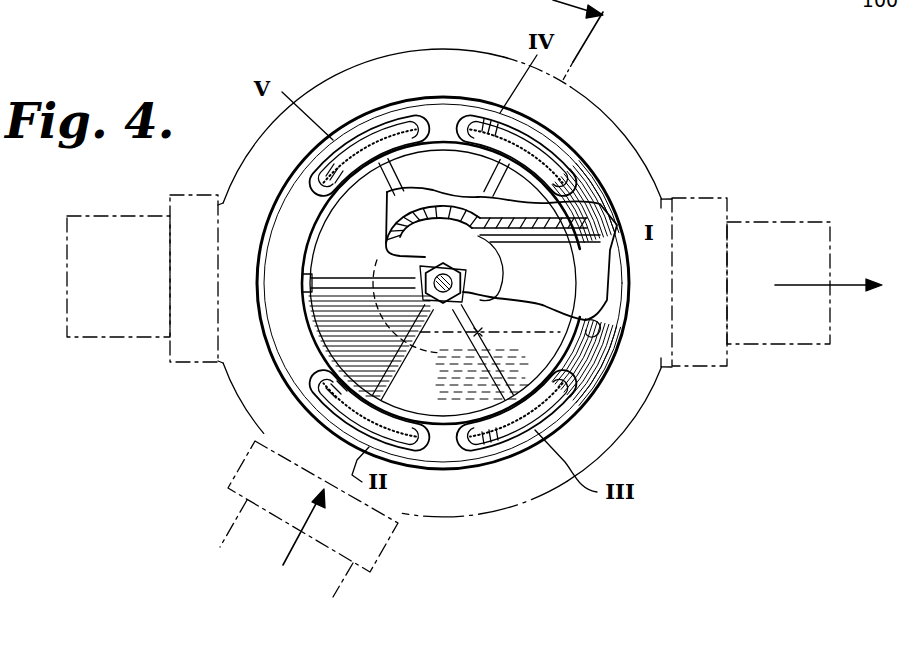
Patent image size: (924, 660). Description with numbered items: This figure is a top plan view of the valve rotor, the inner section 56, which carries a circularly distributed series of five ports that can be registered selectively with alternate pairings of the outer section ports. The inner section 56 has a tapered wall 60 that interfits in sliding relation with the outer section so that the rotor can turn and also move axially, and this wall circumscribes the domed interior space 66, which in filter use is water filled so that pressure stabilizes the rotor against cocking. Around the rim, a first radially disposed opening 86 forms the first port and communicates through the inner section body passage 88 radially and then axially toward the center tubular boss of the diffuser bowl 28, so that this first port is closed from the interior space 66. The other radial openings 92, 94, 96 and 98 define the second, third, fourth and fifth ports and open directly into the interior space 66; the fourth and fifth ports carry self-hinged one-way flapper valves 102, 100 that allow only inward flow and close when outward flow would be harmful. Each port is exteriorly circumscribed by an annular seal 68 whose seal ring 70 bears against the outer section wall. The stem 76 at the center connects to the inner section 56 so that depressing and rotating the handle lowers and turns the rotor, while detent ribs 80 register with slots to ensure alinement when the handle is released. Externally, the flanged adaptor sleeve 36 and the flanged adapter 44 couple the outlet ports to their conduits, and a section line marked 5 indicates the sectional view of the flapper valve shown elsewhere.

The section line 5-5 / vane 5 is at (475, 206).
The diffuser bowl 28 is at (339, 40).
The flanged adaptor sleeve 36 is at (128, 340).
The flanged adapter 44 is at (800, 343).
The inner section 56 is at (608, 157).
The tapered wall 60 is at (452, 97).
The domed interior space 66 is at (610, 194).
The annular seal 68 is at (322, 168).
The seal ring 70 is at (572, 405).
The stem 76 is at (470, 300).
The detent ribs 80 is at (337, 280).
The first radially disposed opening 86 is at (608, 323).
The inner section body passage 88 is at (515, 242).
The radial opening 92 is at (333, 430).
The radial opening 94 is at (507, 448).
The radial opening 96 is at (535, 150).
The radial opening 98 is at (367, 125).
The flapper valve 100 is at (396, 124).
The flapper valve 102 is at (595, 163).